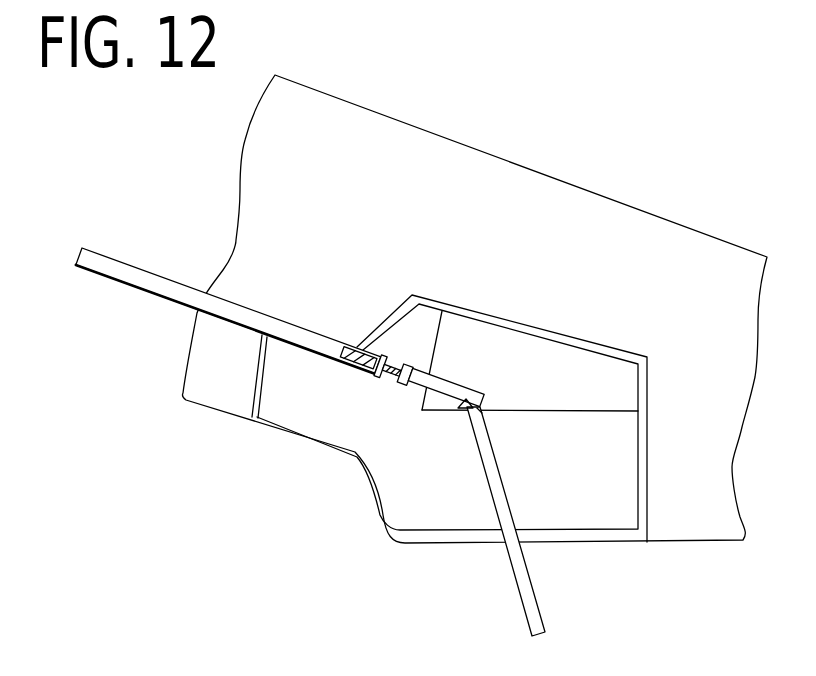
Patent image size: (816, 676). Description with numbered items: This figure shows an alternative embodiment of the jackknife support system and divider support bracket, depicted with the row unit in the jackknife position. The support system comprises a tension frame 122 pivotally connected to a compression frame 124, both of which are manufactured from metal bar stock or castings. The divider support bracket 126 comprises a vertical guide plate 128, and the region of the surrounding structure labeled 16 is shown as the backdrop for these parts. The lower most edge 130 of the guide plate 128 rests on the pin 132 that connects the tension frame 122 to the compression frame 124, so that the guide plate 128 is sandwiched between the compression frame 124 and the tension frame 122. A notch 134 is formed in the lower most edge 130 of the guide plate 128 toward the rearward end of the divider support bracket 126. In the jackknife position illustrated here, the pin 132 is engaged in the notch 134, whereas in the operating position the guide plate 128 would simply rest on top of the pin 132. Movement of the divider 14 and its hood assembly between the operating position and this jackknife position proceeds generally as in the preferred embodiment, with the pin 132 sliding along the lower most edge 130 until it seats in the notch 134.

The divider 14 is at (558, 180).
The panel surface 16 is at (412, 224).
The tension frame 122 is at (253, 317).
The compression frame 124 is at (518, 568).
The divider support bracket 126 is at (557, 331).
The guide plate 128 is at (602, 371).
The lower most edge 130 is at (630, 412).
The pin 132 is at (470, 398).
The notch 134 is at (454, 421).